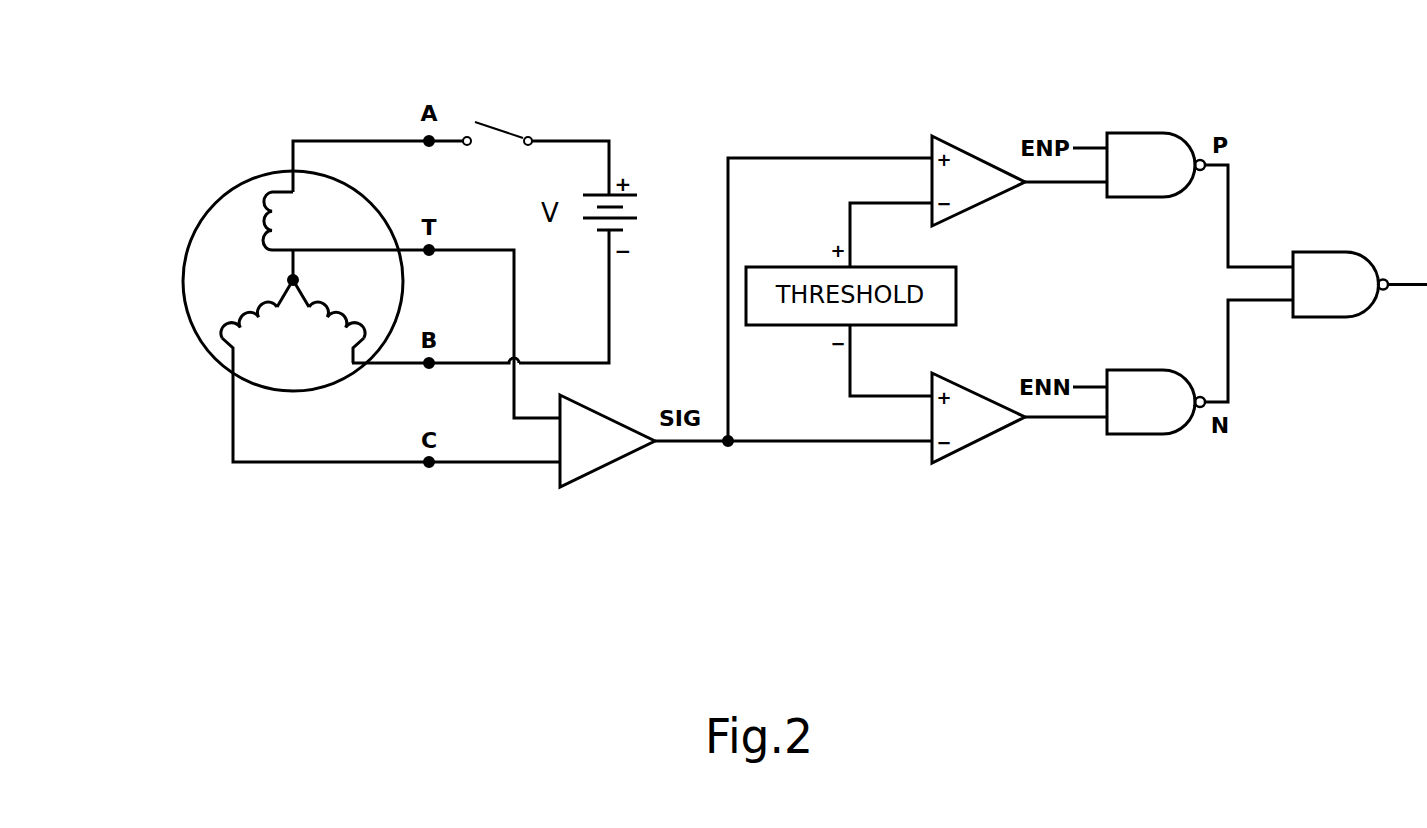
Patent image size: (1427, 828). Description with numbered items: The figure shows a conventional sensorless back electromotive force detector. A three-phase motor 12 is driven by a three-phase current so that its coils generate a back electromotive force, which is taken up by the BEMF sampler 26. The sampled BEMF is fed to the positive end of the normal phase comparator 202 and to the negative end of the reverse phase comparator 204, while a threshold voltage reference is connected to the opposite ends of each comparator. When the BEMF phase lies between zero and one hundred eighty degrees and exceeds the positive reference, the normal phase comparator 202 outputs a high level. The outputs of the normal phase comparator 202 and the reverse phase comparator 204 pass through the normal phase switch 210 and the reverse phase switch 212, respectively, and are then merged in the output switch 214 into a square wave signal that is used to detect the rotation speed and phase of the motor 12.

The three-phase motor 12 is at (210, 208).
The BEMF sampler 26 is at (558, 465).
The normal phase comparator 202 is at (930, 140).
The reverse phase comparator 204 is at (928, 445).
The normal phase switch 210 is at (1138, 132).
The reverse phase switch 212 is at (1140, 435).
The output switch 214 is at (1320, 250).